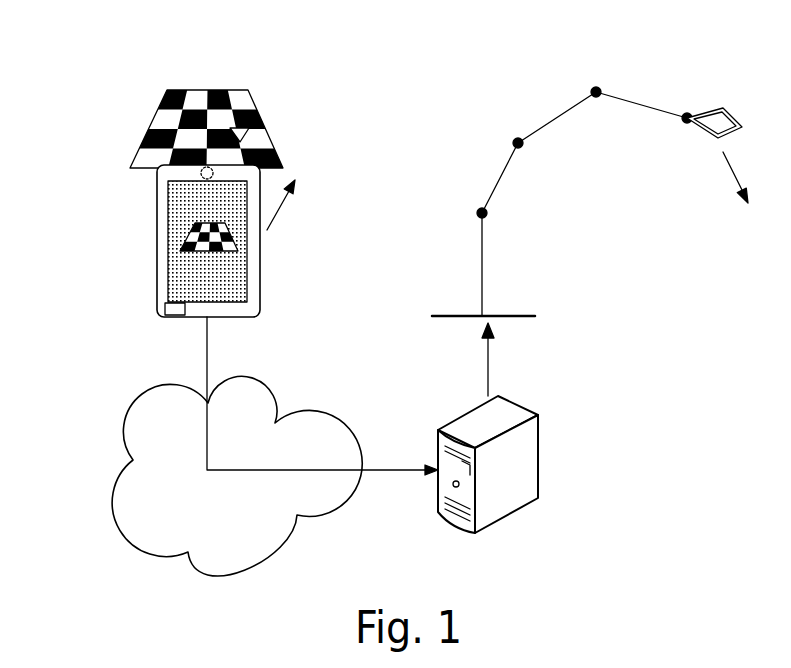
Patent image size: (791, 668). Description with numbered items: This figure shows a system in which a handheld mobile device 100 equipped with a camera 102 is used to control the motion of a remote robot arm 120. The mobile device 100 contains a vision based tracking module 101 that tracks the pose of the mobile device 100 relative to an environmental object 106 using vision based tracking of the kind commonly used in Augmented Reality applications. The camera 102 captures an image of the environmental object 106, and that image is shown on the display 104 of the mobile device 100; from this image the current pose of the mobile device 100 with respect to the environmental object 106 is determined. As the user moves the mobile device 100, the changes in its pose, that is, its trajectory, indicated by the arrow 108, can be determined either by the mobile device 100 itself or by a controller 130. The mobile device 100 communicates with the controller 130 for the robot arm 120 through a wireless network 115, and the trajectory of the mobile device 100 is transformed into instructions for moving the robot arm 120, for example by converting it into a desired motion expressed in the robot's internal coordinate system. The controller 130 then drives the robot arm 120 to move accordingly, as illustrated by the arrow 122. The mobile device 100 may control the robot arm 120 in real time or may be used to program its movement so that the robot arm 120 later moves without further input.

The mobile device 100 is at (190, 231).
The vision based tracking module 101 is at (165, 305).
The camera 102 is at (201, 173).
The display 104 is at (247, 282).
The environmental object 106 is at (251, 99).
The arrow 108 is at (282, 211).
The wireless network 115 is at (110, 487).
The robot arm 120 is at (531, 90).
The arrow 122 is at (740, 192).
The controller 130 is at (538, 461).